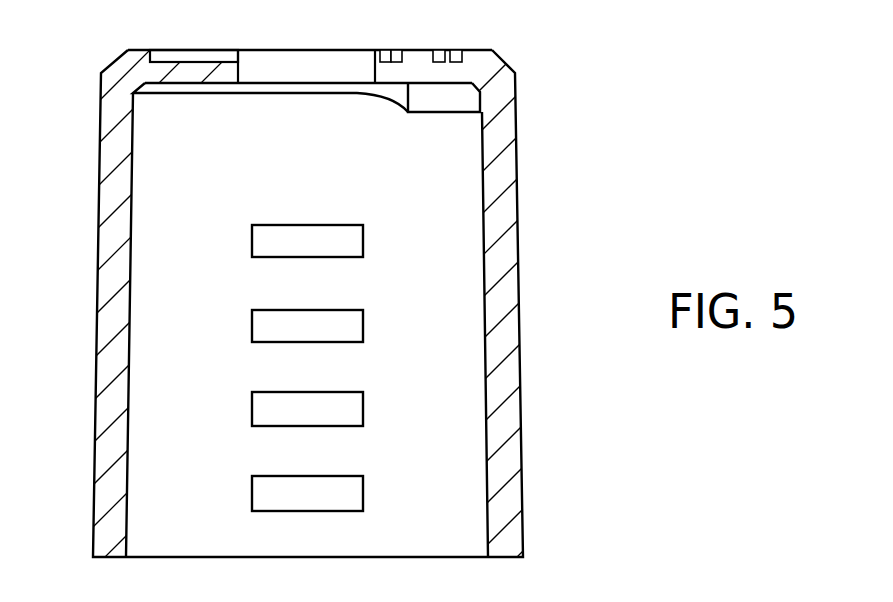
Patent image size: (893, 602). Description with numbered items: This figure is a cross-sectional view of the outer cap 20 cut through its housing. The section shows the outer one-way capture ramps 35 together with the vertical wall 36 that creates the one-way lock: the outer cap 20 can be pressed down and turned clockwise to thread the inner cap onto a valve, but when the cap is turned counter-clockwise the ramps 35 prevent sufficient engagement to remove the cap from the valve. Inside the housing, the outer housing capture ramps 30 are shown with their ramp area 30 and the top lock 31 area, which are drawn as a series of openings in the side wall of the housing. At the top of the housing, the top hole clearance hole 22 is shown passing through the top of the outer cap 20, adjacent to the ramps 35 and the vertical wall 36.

The outer cap 20 is at (518, 242).
The top hole clearance hole 22 is at (310, 68).
The outer housing capture ramps 30 is at (247, 333).
The top lock area 31 is at (342, 475).
The outer one-way capture ramps 35 is at (402, 106).
The vertical wall 36 is at (422, 99).